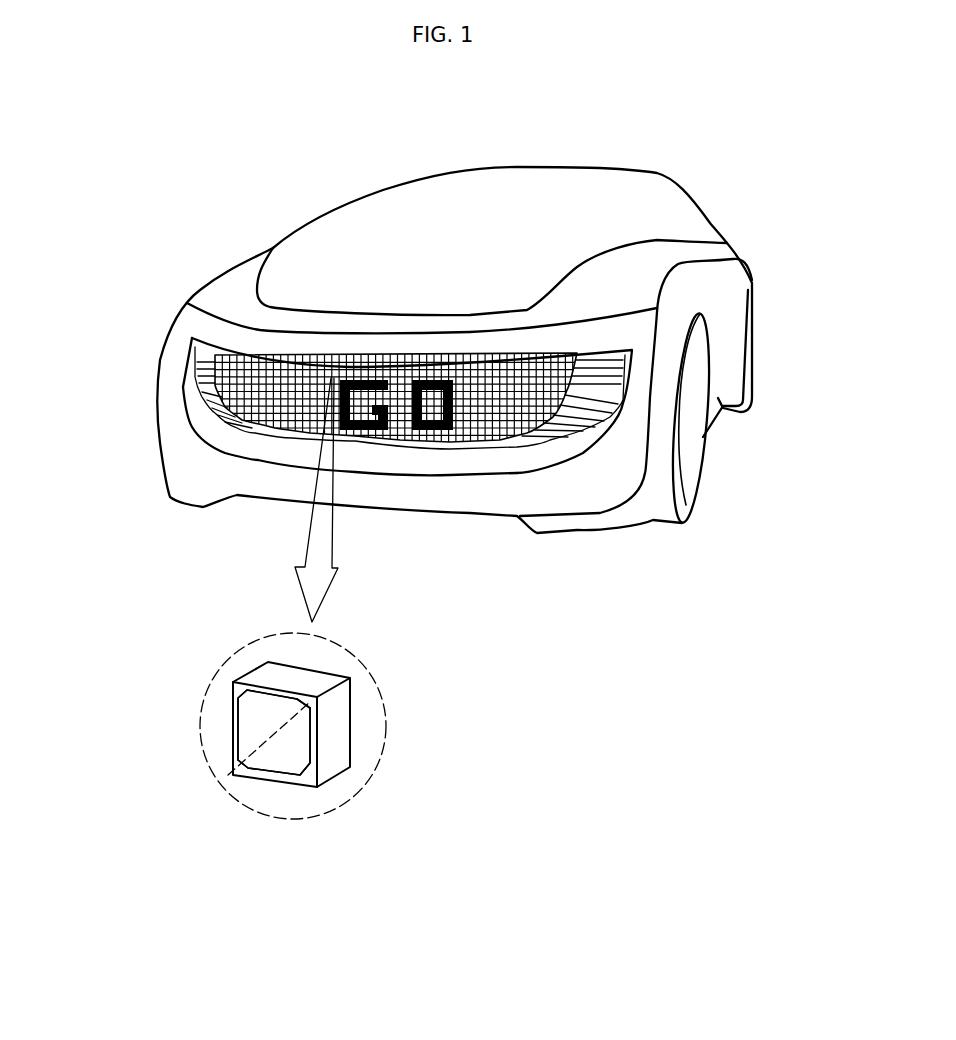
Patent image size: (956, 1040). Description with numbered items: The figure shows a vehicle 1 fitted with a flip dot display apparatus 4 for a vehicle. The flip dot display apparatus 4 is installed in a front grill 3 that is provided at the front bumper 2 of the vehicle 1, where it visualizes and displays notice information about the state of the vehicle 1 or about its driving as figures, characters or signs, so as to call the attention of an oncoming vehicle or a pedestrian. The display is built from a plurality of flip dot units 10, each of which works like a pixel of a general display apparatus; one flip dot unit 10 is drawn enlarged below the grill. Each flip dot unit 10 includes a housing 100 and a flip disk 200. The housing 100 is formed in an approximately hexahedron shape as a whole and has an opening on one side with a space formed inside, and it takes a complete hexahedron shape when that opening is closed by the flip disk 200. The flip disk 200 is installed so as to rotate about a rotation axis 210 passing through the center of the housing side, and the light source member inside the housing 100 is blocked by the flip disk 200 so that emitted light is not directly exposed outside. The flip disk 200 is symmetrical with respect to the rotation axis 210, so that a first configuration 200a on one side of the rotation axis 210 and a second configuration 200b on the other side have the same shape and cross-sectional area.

The vehicle 1 is at (698, 185).
The front bumper 2 is at (188, 463).
The front grill 3 is at (577, 452).
The flip dot display apparatus 4 is at (268, 357).
The flip dot unit 10 is at (289, 776).
The housing 100 is at (337, 743).
The flip disk 200 is at (277, 753).
The first configuration 200a is at (247, 742).
The second configuration 200b is at (295, 765).
The rotation axis 210 is at (267, 740).